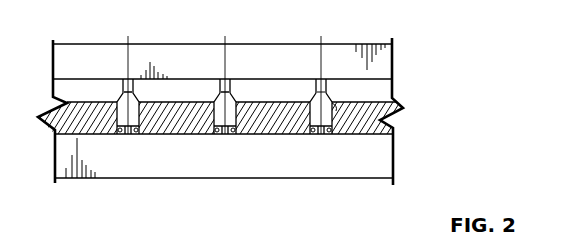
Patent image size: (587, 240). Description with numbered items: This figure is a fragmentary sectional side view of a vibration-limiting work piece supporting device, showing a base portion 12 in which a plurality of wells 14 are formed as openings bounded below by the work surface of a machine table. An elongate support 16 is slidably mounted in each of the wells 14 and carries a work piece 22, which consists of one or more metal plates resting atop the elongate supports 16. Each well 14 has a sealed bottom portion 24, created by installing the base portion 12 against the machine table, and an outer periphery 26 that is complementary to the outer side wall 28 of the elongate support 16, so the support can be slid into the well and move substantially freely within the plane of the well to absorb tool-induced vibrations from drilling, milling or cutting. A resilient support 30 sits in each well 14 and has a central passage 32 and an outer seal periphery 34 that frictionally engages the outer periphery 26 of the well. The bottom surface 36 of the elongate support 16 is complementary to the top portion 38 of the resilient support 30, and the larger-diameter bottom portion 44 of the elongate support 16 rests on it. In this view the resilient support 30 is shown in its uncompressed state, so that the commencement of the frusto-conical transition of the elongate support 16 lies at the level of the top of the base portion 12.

The base portion 12 is at (393, 128).
The work piece 22 is at (334, 57).
The wells 14 is at (212, 147).
The elongate support 16 is at (109, 117).
The top portion of the resilient support 38 is at (128, 134).
The outer seal periphery 34 is at (136, 134).
The outer side wall 28 is at (220, 134).
The sealed bottom portion 24 is at (227, 134).
The outer periphery of the well 26 is at (232, 134).
The bottom portion of the elongate support 44 is at (333, 134).
The central passage 32 is at (315, 134).
The bottom surface 36 is at (320, 134).
The resilient support 30 is at (328, 134).